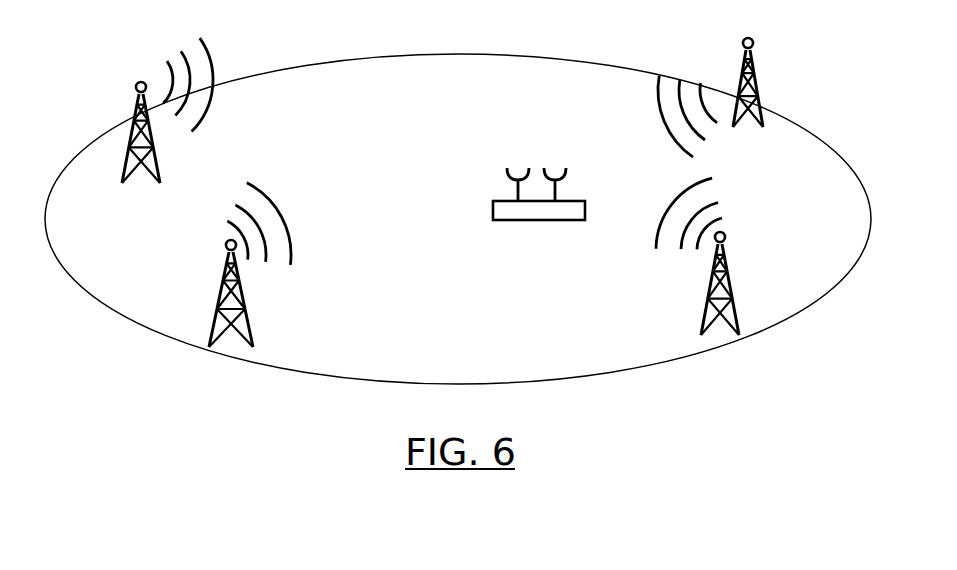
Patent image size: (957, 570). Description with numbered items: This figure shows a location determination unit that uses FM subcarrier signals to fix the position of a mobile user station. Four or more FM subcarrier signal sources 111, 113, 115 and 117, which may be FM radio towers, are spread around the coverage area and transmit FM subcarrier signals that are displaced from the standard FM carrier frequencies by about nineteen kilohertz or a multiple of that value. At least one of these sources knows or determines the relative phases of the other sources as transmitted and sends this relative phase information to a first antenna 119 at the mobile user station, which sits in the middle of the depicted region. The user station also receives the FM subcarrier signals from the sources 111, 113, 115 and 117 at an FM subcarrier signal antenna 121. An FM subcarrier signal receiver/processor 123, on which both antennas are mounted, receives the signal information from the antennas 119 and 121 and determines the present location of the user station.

The FM subcarrier signal source 111 is at (136, 83).
The FM subcarrier signal source 113 is at (753, 40).
The FM subcarrier signal source 115 is at (726, 233).
The FM subcarrier signal source 117 is at (227, 242).
The first antenna 119 is at (513, 193).
The FM subcarrier signal antenna 121 is at (562, 193).
The FM subcarrier signal receiver/processor 123 is at (540, 210).